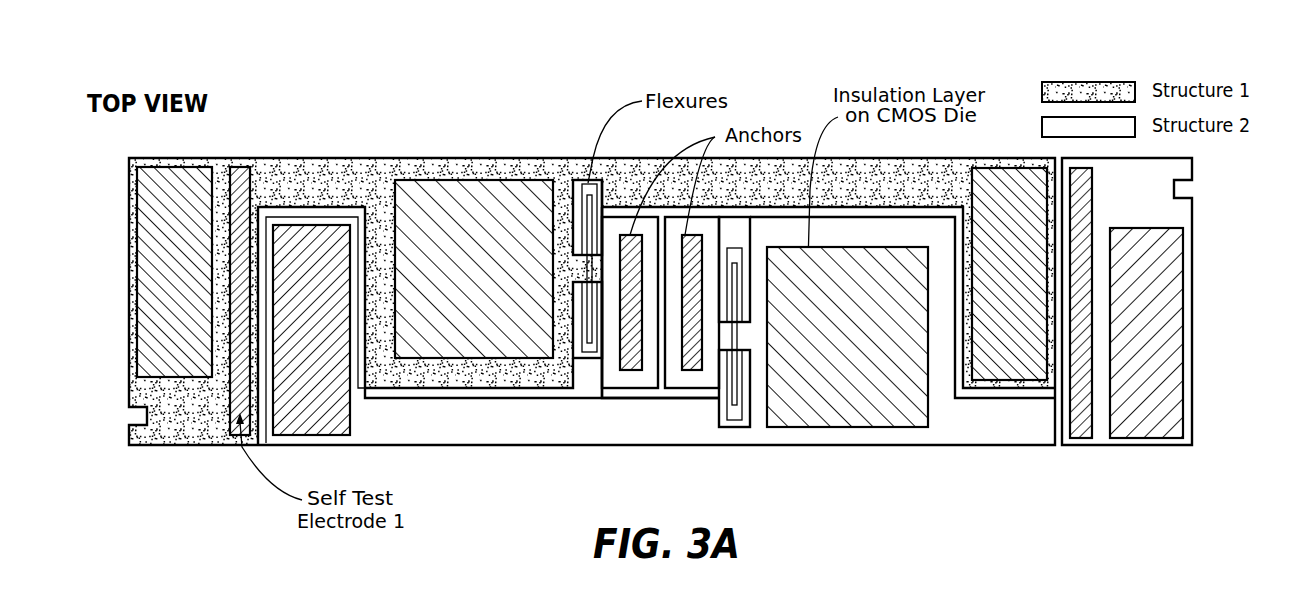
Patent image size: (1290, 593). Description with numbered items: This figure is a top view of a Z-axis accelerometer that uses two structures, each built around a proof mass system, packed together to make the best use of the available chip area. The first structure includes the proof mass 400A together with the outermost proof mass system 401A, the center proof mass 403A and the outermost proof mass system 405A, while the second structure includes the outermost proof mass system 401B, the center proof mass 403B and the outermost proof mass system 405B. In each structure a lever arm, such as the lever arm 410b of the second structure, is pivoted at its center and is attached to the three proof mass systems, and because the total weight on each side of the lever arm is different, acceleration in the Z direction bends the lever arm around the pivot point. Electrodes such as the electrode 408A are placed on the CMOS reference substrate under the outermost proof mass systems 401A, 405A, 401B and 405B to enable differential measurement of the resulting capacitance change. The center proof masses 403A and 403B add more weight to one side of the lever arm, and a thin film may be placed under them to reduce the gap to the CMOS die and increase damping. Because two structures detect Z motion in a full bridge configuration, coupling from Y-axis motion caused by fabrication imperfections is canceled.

The proof mass 400A is at (310, 178).
The proof mass system 401A is at (170, 158).
The electrode 408A is at (170, 347).
The proof mass system 401B is at (305, 438).
The center proof mass 403A is at (450, 180).
The center proof mass 403B is at (847, 427).
The proof mass system 405A is at (1015, 367).
The proof mass system 405B is at (1168, 440).
The lever arm 410b is at (618, 432).